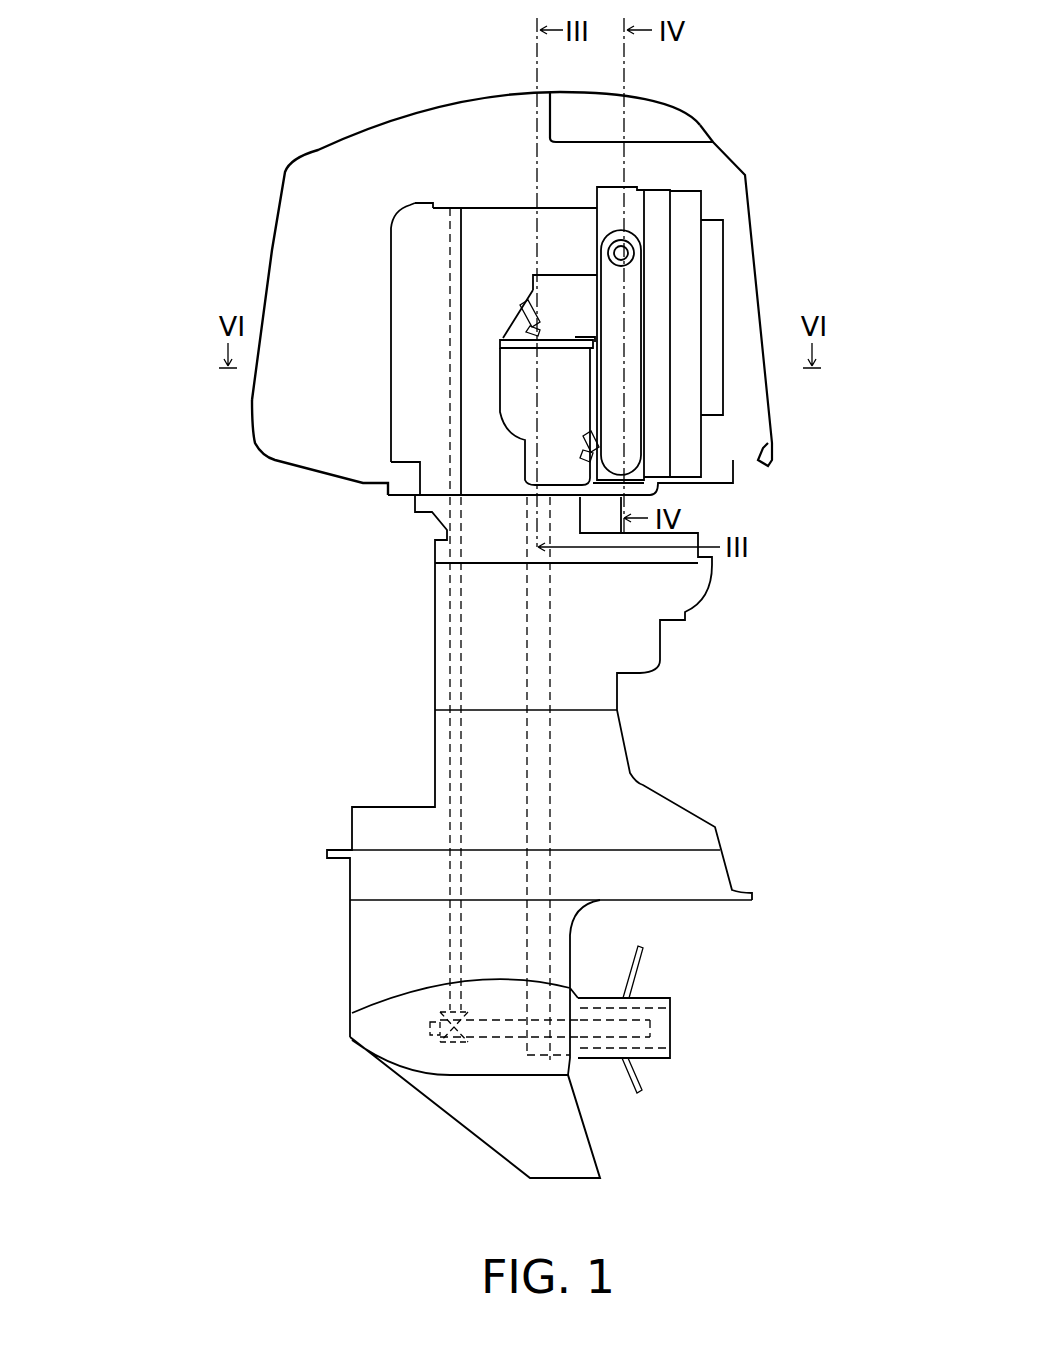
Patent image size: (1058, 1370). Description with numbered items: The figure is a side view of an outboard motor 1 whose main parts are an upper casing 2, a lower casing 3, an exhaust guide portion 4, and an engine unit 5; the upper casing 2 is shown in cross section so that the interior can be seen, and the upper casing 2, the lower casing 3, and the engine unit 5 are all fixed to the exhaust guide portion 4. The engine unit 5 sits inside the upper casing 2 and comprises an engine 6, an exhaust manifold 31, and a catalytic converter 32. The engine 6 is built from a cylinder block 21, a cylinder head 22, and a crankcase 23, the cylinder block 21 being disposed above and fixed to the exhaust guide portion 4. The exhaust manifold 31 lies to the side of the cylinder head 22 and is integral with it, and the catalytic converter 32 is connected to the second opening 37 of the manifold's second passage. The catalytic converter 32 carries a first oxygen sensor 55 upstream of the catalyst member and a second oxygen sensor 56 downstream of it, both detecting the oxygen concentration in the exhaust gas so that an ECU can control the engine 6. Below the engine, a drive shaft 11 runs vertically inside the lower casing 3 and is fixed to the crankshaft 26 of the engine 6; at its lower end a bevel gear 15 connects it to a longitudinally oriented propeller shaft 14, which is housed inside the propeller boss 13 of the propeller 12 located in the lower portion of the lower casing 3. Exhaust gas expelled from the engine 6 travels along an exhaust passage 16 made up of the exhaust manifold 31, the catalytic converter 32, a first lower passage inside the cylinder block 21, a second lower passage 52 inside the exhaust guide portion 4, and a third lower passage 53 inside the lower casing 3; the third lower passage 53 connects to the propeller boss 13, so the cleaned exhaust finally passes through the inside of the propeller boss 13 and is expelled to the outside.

The outboard motor 1 is at (322, 88).
The upper casing 2 is at (318, 157).
The lower casing 3 is at (425, 730).
The exhaust guide portion 4 is at (445, 535).
The engine unit 5 is at (367, 342).
The engine 6 is at (483, 193).
The drive shaft 11 is at (450, 783).
The propeller 12 is at (692, 1035).
The propeller boss 13 is at (600, 1060).
The propeller shaft 14 is at (500, 1040).
The bevel gear 15 is at (445, 1042).
The exhaust passage 16 is at (574, 651).
The cylinder block 21 is at (513, 217).
The cylinder head 22 is at (647, 207).
The crankcase 23 is at (415, 225).
The crankshaft 26 is at (450, 397).
The exhaust manifold 31 is at (669, 307).
The catalytic converter 32 is at (569, 379).
The second opening 37 is at (588, 308).
The second lower passage 52 is at (538, 549).
The third lower passage 53 is at (550, 738).
The first oxygen sensor 55 is at (525, 327).
The second oxygen sensor 56 is at (530, 438).